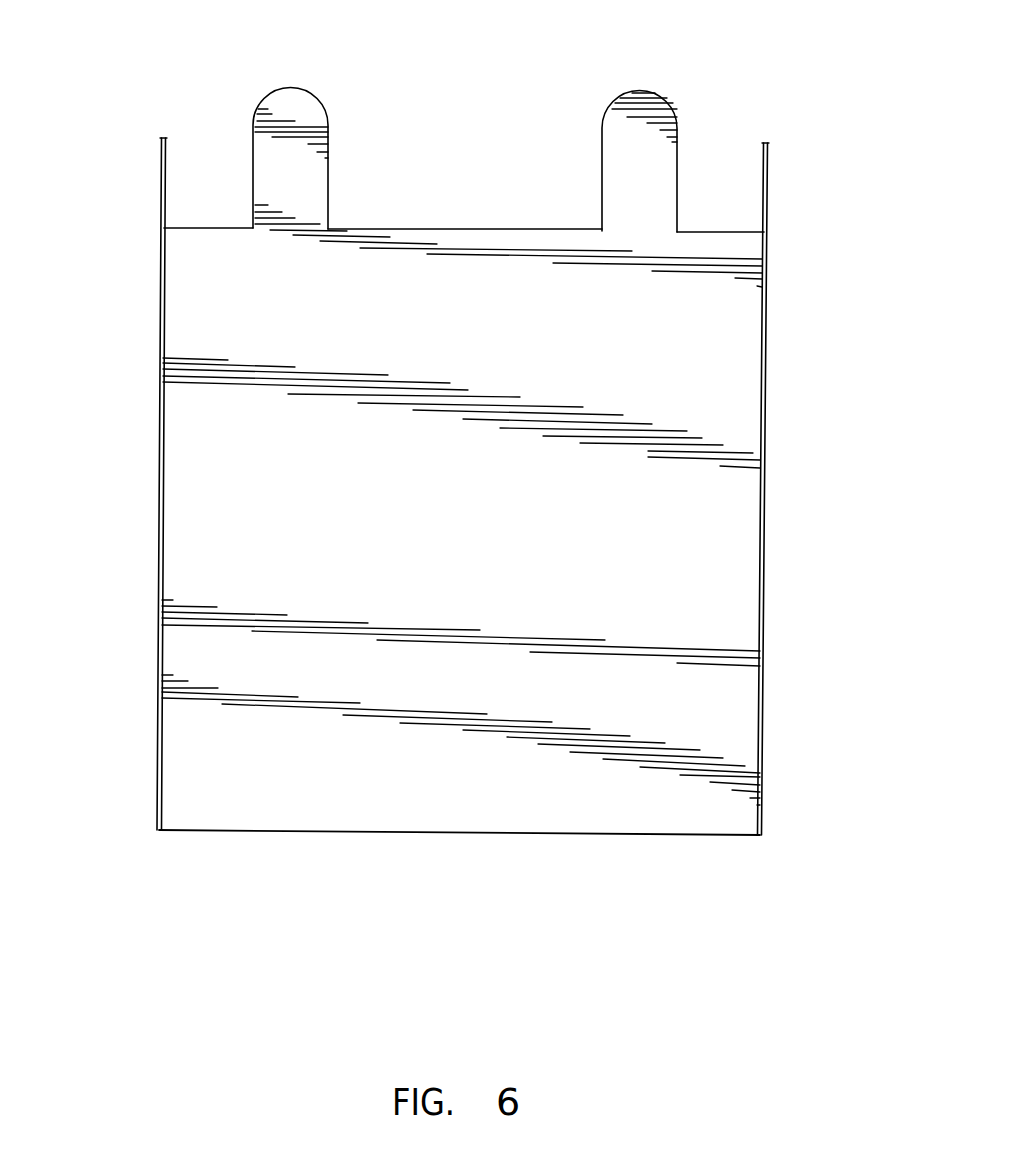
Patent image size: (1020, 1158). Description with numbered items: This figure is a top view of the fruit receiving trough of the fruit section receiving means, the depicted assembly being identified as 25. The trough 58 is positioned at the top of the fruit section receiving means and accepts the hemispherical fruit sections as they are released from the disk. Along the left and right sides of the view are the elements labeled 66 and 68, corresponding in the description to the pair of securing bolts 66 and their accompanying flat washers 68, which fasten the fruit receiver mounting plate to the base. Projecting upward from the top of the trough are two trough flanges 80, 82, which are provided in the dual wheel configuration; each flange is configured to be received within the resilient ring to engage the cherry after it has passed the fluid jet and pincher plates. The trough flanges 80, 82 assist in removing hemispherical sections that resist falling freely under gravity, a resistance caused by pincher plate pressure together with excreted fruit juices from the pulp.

The tool assembly 25 is at (482, 82).
The trough 58 is at (698, 805).
The securing bolts 66 is at (160, 650).
The flat washers 68 is at (760, 690).
The trough flange 80 is at (308, 137).
The trough flange 82 is at (623, 159).